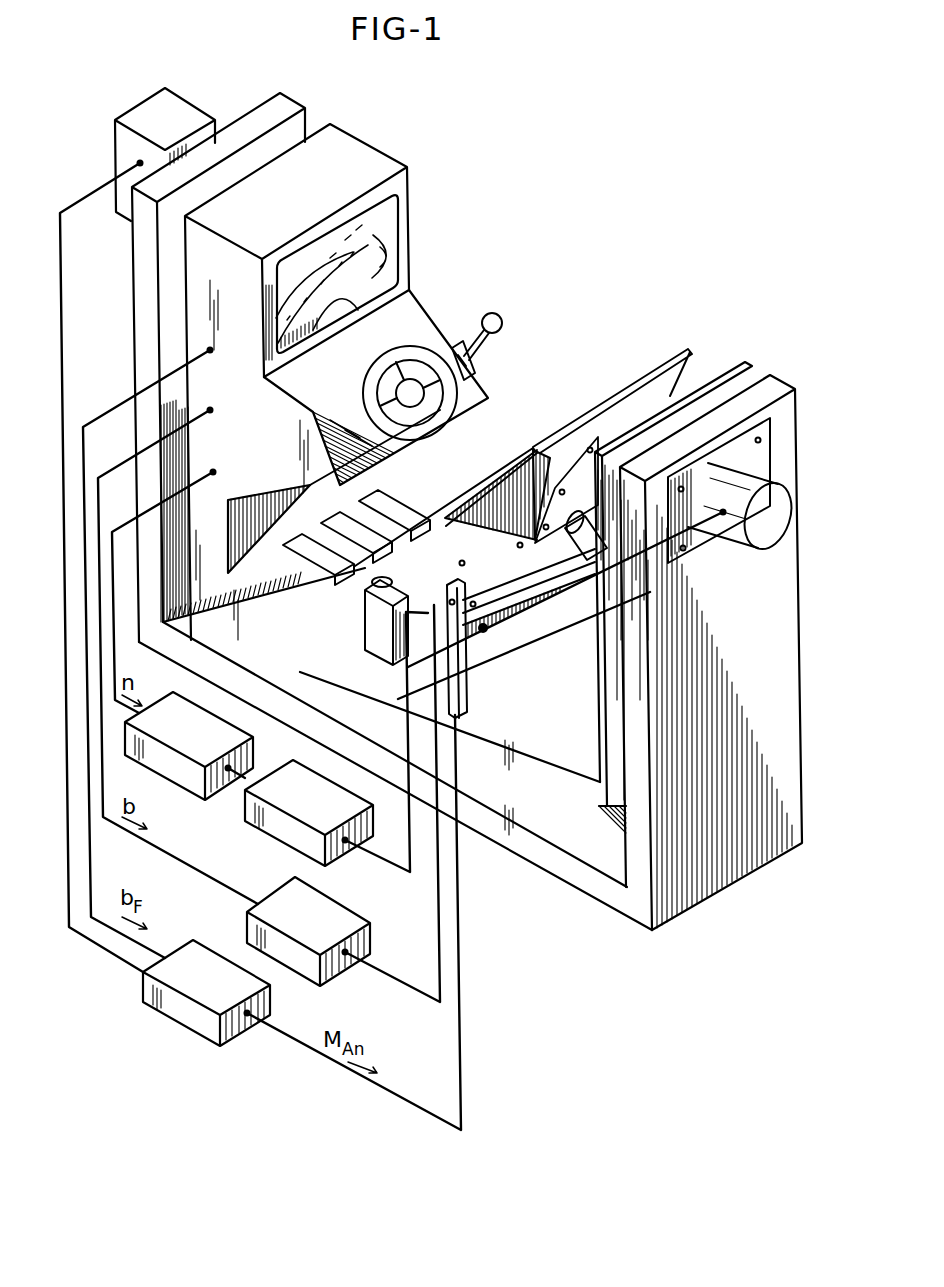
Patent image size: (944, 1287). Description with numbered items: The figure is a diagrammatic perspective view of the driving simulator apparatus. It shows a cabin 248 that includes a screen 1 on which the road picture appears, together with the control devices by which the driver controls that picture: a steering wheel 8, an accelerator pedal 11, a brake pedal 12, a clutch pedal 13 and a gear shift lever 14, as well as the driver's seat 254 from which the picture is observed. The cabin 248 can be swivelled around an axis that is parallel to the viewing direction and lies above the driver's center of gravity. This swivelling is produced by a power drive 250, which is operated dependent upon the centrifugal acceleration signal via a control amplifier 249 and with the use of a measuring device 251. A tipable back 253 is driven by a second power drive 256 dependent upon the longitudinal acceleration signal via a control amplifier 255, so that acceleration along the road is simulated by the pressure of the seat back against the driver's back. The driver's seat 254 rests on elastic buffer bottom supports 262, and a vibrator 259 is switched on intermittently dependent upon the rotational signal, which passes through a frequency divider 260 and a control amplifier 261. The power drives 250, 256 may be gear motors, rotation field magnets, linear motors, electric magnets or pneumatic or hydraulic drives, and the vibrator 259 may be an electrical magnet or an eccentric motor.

The screen 1 is at (390, 240).
The steering wheel 8 is at (450, 387).
The accelerator pedal 11 is at (380, 498).
The brake pedal 12 is at (335, 518).
The clutch pedal 13 is at (300, 543).
The gear shift lever 14 is at (497, 315).
The cabin 248 is at (417, 307).
The control amplifier 249 is at (202, 950).
The power drive 250 is at (733, 547).
The measuring device 251 is at (150, 110).
The tipable back 253 is at (623, 390).
The driver's seat 254 is at (480, 493).
The control amplifier 255 is at (320, 903).
The power drive 256 is at (580, 507).
The vibrator 259 is at (428, 612).
The frequency divider 260 is at (185, 780).
The control amplifier 261 is at (257, 822).
The elastic buffer bottom supports 262 is at (380, 584).